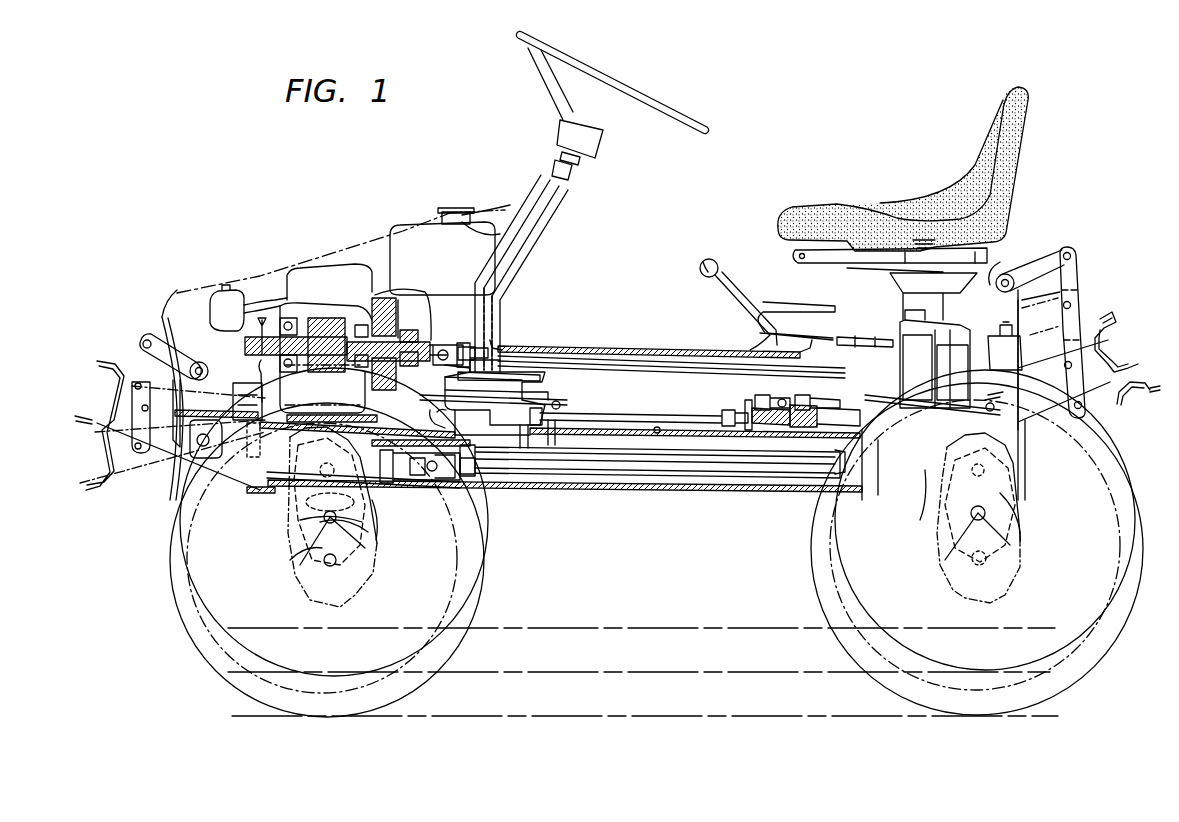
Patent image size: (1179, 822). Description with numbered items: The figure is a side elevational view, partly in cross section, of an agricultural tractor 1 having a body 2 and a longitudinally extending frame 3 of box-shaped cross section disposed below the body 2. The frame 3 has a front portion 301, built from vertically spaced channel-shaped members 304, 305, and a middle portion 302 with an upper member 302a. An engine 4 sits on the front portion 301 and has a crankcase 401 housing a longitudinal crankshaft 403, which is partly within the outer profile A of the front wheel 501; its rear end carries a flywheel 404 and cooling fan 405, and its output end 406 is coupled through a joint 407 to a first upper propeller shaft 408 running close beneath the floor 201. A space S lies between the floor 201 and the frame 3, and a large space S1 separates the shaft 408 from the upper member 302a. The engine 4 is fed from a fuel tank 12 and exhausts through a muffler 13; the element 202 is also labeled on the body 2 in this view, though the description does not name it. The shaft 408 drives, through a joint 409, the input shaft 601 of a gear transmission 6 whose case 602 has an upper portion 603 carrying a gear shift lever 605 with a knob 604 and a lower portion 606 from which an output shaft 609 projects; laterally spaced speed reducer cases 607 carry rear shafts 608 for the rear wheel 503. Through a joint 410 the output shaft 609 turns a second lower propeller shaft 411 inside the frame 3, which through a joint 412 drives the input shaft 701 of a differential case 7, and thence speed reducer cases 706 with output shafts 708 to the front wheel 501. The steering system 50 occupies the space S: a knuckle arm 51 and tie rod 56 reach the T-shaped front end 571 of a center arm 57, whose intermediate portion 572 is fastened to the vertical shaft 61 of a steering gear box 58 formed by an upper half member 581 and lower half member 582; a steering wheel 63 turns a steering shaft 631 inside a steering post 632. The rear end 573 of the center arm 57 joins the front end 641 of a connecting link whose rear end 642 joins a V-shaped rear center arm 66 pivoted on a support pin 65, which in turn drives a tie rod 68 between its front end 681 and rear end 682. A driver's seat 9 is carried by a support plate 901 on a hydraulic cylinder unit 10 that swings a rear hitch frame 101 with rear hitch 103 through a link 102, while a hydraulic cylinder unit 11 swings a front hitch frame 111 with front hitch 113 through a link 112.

The tractor 1 is at (857, 147).
The body 2 is at (577, 338).
The frame 3 is at (622, 490).
The engine 4 is at (350, 250).
The gear transmission 6 is at (938, 348).
The differential case 7 is at (320, 545).
The driver's seat 9 is at (903, 213).
The hydraulic cylinder unit 10 is at (1000, 272).
The hydraulic cylinder unit 11 is at (207, 360).
The fuel tank 12 is at (487, 226).
The muffler 13 is at (222, 290).
The steering system 50 is at (703, 412).
The knuckle arm 51 is at (392, 442).
The tie rod 56 is at (362, 392).
The center arm 57 is at (490, 420).
The steering gear box 58 is at (548, 370).
The vertical shaft 61 is at (548, 405).
The steering wheel 63 is at (698, 127).
The support pin 65 is at (800, 434).
The rear center arm 66 is at (776, 430).
The tie rod 68 is at (934, 399).
The rear hitch frame 101 is at (1120, 405).
The link 102 is at (1072, 289).
The rear hitch 103 is at (1116, 325).
The front hitch frame 111 is at (150, 468).
The link 112 is at (140, 366).
The front hitch 113 is at (82, 443).
The floor 201 is at (628, 343).
The fuel tank 202 is at (403, 231).
The front portion 301 is at (415, 500).
The middle portion 302 is at (690, 490).
The upper member 302a is at (658, 434).
The channel-shaped member 304 is at (258, 470).
The channel-shaped member 305 is at (292, 472).
The crankcase 401 is at (268, 362).
The crankshaft 403 is at (322, 316).
The flywheel 404 is at (378, 312).
The cooling fan 405 is at (412, 310).
The output end 406 is at (422, 340).
The joint 407 is at (498, 324).
The first upper propeller shaft 408 is at (642, 362).
The joint 409 is at (787, 347).
The joint 410 is at (866, 500).
The second lower propeller shaft 411 is at (730, 466).
The joint 412 is at (433, 482).
The front wheel 501 is at (483, 602).
The rear wheel 503 is at (832, 604).
The T-shaped front end 571 is at (495, 338).
The intermediate portion 572 is at (530, 452).
The rear end 573 is at (560, 446).
The upper half member 581 is at (515, 356).
The lower half member 582 is at (530, 383).
The input shaft 601 is at (948, 372).
The case 602 is at (968, 355).
The upper portion 603 is at (912, 350).
The knob 604 is at (724, 258).
The gear shift lever 605 is at (736, 300).
The lower portion 606 is at (928, 522).
The speed reducer case 607 is at (1022, 513).
The rear shaft 608 is at (1000, 540).
The output shaft 609 is at (925, 488).
The steering shaft 631 is at (585, 165).
The steering post 632 is at (560, 217).
The front end 641 is at (646, 404).
The rear end 642 is at (748, 396).
The front end 681 is at (749, 455).
The rear end 682 is at (1034, 440).
The input shaft 701 is at (378, 520).
The speed reducer case 706 is at (292, 568).
The output shaft 708 is at (335, 522).
The support plate 901 is at (828, 262).
The outer profile A is at (500, 522).
The space S is at (696, 404).
The space S1 is at (673, 393).